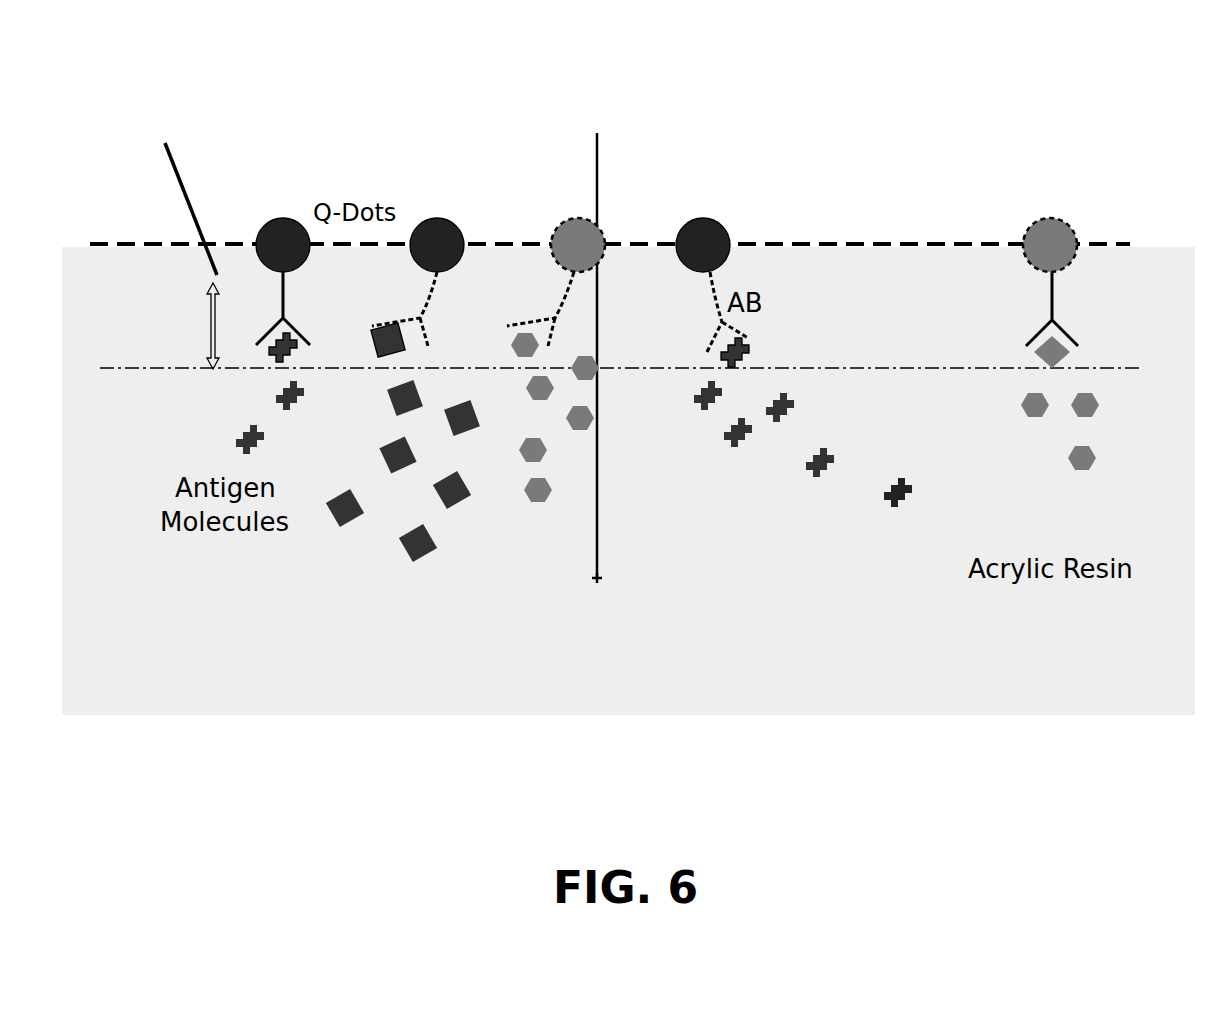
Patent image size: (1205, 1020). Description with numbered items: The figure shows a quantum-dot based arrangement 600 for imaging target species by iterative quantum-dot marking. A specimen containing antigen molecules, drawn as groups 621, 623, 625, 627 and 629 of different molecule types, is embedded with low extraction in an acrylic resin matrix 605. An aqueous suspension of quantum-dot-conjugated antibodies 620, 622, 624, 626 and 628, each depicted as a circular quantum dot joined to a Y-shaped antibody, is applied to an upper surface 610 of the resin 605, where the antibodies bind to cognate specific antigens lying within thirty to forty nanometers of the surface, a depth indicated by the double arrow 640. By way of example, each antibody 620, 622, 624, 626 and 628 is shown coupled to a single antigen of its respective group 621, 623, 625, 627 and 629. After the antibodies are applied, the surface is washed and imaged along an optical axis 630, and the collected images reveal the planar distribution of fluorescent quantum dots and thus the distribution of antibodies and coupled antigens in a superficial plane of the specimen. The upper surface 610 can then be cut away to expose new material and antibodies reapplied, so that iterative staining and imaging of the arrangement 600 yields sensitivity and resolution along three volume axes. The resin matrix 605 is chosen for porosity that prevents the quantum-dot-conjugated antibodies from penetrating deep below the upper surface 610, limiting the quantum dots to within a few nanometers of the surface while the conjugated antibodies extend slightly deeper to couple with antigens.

The quantum-dot based arrangement 600 is at (898, 56).
The acrylic resin matrix 605 is at (628, 481).
The upper surface 610 is at (1136, 250).
The quantum-dot-conjugated antibody 620 is at (272, 220).
The antigen molecules 621 is at (224, 436).
The quantum-dot-conjugated antibody 622 is at (436, 222).
The antigen molecules 623 is at (428, 572).
The quantum-dot-conjugated antibody 624 is at (578, 222).
The antigen molecules 625 is at (514, 500).
The quantum-dot-conjugated antibody 626 is at (700, 222).
The antigen molecules 627 is at (903, 505).
The quantum-dot-conjugated antibody 628 is at (1042, 224).
The antigen molecules 629 is at (1080, 470).
The optical axis 630 is at (599, 148).
The double arrow 640 is at (165, 236).